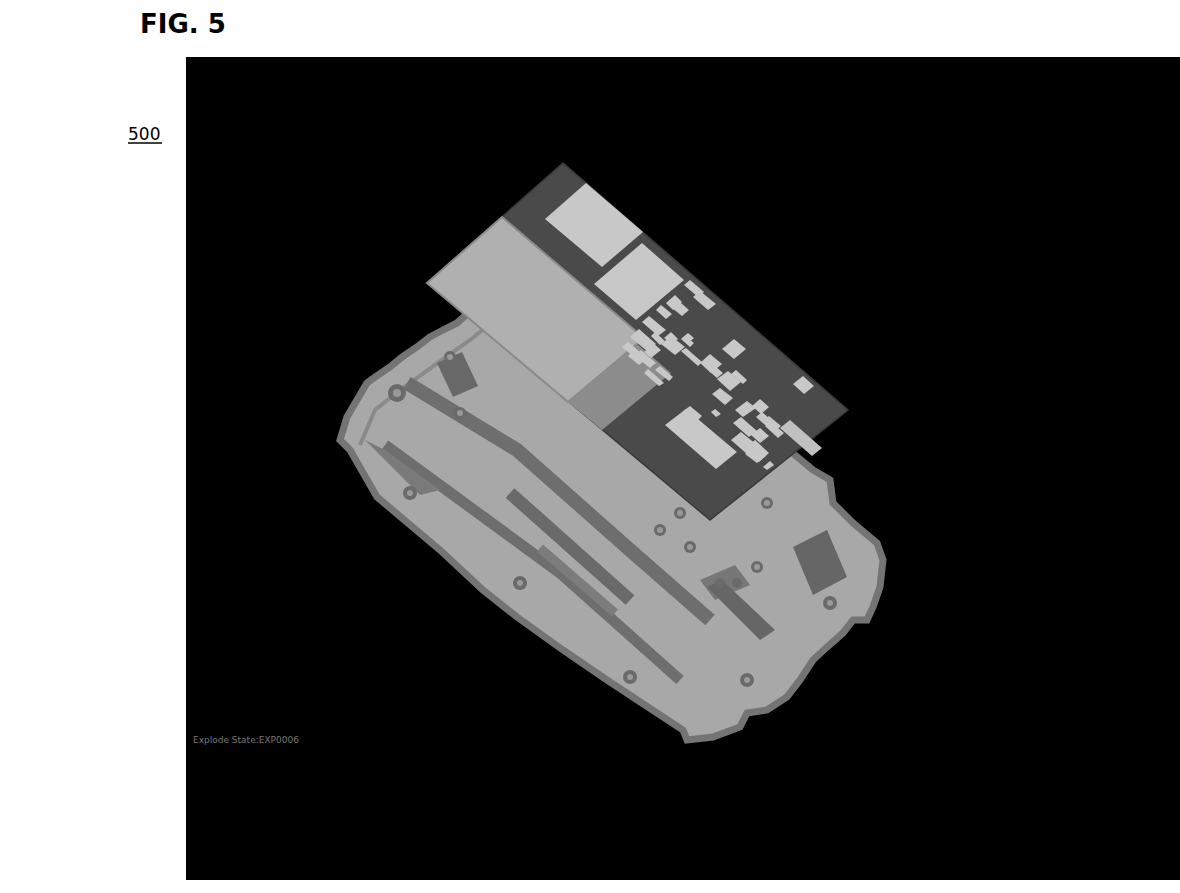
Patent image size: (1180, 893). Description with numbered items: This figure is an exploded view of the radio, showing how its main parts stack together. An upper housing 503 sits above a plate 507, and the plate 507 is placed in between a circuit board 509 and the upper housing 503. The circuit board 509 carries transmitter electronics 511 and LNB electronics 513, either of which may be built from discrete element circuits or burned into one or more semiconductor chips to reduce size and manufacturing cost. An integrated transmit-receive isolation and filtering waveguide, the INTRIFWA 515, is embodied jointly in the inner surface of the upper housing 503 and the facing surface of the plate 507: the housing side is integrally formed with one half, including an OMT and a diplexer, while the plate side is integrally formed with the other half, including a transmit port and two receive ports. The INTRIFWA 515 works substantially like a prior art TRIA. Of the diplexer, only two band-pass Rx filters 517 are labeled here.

The upper housing 503 is at (611, 497).
The plate 507 is at (717, 519).
The circuit board 509 is at (925, 478).
The transmitter electronics 511 is at (611, 321).
The LNB electronics 513 is at (523, 296).
The integrated transmit-receive isolation and filtering waveguide (INTRIFWA) 515 is at (725, 687).
The band-pass Rx filters 517 is at (528, 560).